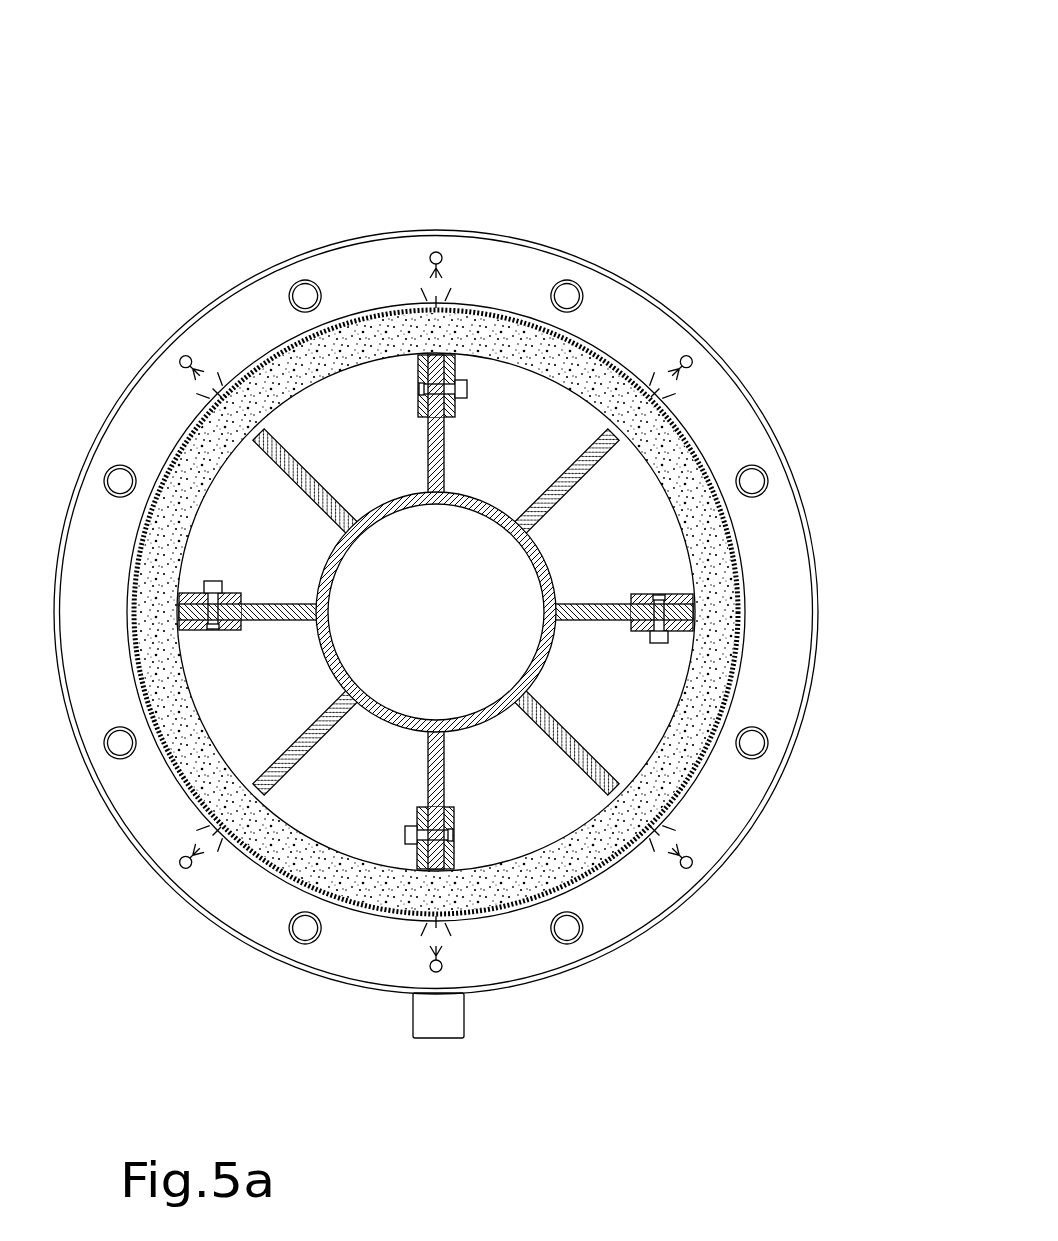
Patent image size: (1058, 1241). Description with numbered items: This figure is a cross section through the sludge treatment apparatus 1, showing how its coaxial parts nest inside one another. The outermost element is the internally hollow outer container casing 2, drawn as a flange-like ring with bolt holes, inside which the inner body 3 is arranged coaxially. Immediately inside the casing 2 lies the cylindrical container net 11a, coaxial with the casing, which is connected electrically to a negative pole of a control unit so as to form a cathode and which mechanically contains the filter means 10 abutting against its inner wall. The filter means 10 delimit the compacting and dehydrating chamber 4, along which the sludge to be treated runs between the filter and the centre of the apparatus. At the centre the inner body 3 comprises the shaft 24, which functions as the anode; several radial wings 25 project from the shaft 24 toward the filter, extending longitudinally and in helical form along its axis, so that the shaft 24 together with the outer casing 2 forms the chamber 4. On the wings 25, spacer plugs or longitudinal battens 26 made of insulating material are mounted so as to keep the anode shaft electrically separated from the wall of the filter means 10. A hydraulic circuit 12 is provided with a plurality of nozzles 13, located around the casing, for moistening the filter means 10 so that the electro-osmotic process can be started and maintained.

The apparatus for the treatment of sludge 1 is at (670, 106).
The outer container casing 2 is at (272, 262).
The inner body 3 is at (560, 540).
The compacting and dehydrating chamber 4 is at (263, 520).
The filter means 10 is at (602, 383).
The container net 11a is at (681, 426).
The hydraulic circuit 12 is at (434, 250).
The nozzles 13 is at (207, 378).
The shaft 24 is at (483, 497).
The radial wings 25 is at (428, 462).
The spacer plugs or longitudinal battens 26 is at (463, 355).